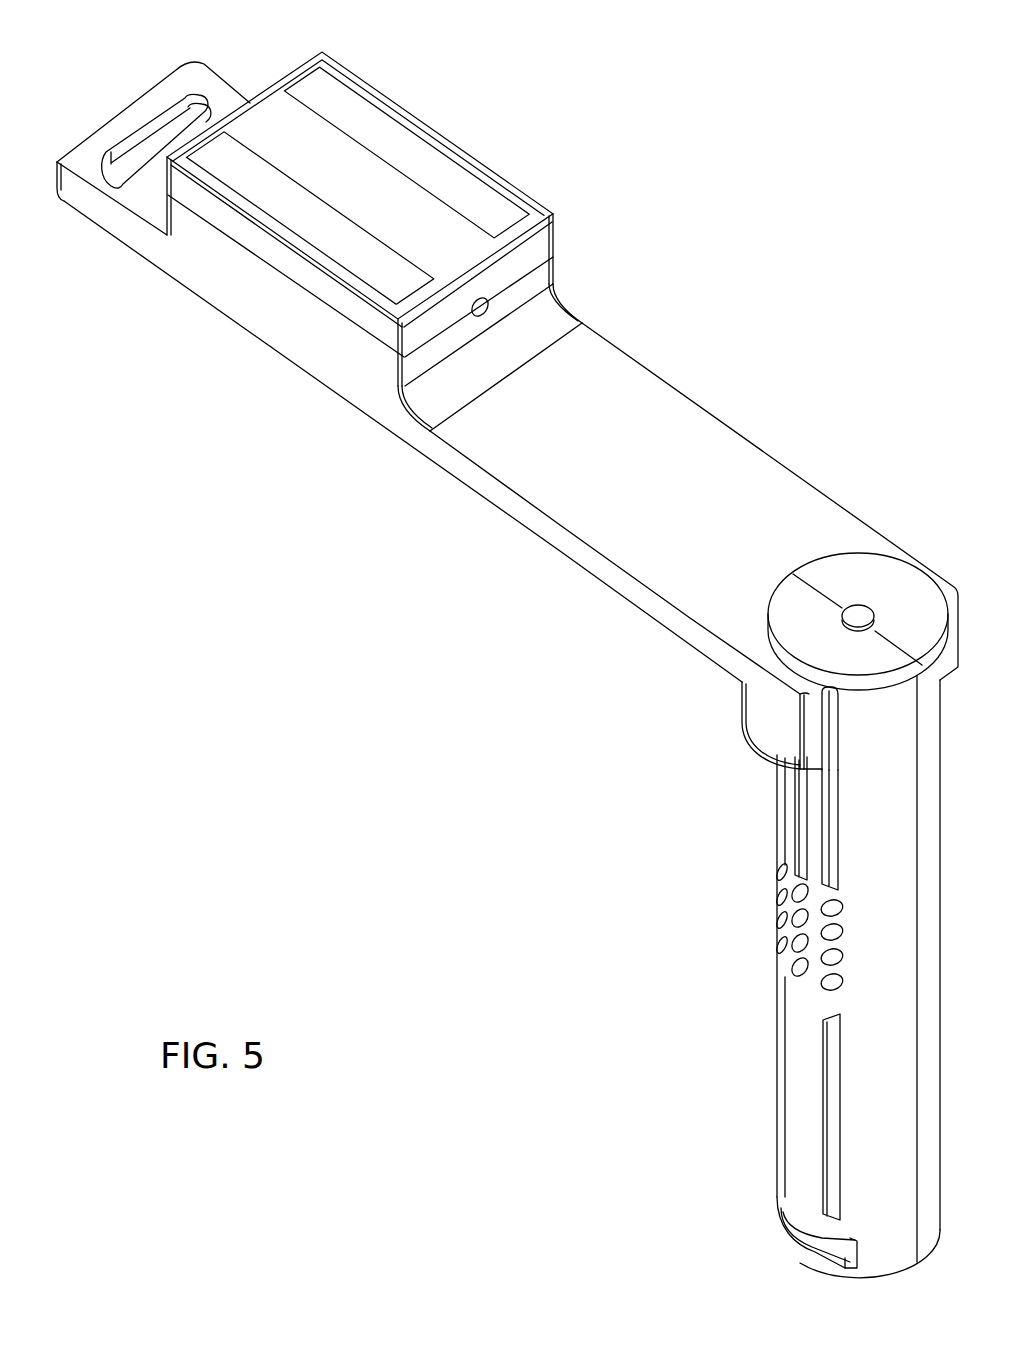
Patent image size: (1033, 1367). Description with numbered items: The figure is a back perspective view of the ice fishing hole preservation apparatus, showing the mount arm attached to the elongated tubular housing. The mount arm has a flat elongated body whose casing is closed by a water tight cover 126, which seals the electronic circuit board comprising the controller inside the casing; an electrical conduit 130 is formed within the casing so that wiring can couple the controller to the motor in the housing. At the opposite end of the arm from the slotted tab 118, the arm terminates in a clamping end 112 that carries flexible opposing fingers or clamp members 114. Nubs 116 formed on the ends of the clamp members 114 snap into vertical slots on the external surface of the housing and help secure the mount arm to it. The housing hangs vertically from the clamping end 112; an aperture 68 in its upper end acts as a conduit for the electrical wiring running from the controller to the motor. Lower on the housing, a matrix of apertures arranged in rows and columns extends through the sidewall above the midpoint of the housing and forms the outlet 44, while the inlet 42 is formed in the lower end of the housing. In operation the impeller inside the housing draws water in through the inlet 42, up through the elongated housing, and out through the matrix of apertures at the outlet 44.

The inlet 42 is at (758, 1231).
The matrix outlet 44 is at (738, 932).
The aperture 68 is at (861, 609).
The clamping end 112 is at (756, 646).
The clamp members 114 is at (767, 718).
The nubs 116 is at (810, 741).
The attachment tab with slot 118 is at (140, 124).
The water tight cover 126 is at (420, 158).
The electrical conduit 130 is at (490, 308).